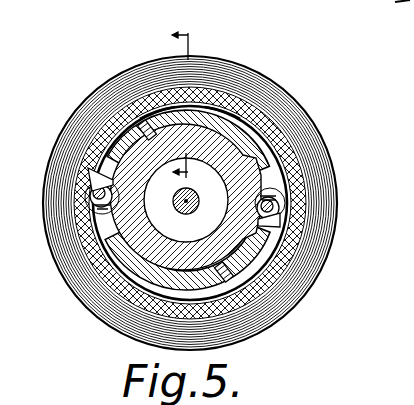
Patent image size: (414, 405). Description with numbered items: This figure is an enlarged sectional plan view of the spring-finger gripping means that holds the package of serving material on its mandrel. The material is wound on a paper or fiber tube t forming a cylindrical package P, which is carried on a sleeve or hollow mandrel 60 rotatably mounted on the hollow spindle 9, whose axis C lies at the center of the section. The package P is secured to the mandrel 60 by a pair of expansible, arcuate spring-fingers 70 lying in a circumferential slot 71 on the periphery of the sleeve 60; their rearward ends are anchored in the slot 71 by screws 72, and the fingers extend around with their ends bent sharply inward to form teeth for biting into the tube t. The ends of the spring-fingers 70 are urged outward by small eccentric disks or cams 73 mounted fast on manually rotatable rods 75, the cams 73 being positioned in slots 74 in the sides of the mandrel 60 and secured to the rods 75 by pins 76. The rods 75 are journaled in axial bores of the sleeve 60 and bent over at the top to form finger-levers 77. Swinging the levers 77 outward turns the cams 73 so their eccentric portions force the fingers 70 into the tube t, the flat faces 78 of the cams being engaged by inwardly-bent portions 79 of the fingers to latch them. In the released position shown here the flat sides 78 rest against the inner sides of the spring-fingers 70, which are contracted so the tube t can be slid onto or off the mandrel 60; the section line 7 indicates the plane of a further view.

The sleeve or hollow mandrel 60 is at (241, 143).
The spring-fingers 70 is at (273, 148).
The circumferential slot 71 is at (221, 110).
The screws 72 is at (156, 112).
The eccentric disks or cams 73 is at (282, 193).
The slots 74 is at (281, 261).
The manually rotatable rods 75 is at (282, 212).
The pins 76 is at (280, 203).
The finger-levers 77 is at (250, 277).
The flat faces 78 is at (282, 207).
The inwardly-bent portions 79 is at (281, 246).
The hollow spindle 9 is at (233, 211).
The line 7-7 section indicator 7 is at (188, 100).
The cylindrical package P is at (88, 100).
The paper or fiber tube t is at (124, 104).
The center C is at (184, 221).